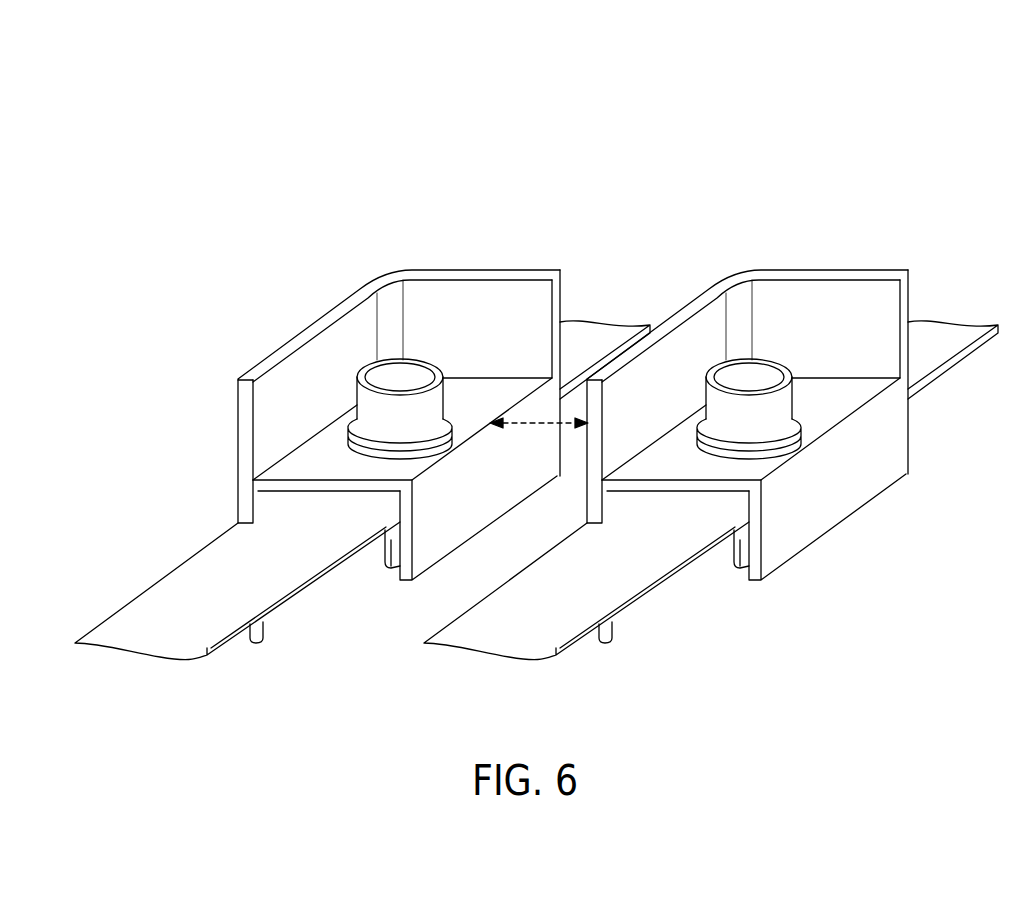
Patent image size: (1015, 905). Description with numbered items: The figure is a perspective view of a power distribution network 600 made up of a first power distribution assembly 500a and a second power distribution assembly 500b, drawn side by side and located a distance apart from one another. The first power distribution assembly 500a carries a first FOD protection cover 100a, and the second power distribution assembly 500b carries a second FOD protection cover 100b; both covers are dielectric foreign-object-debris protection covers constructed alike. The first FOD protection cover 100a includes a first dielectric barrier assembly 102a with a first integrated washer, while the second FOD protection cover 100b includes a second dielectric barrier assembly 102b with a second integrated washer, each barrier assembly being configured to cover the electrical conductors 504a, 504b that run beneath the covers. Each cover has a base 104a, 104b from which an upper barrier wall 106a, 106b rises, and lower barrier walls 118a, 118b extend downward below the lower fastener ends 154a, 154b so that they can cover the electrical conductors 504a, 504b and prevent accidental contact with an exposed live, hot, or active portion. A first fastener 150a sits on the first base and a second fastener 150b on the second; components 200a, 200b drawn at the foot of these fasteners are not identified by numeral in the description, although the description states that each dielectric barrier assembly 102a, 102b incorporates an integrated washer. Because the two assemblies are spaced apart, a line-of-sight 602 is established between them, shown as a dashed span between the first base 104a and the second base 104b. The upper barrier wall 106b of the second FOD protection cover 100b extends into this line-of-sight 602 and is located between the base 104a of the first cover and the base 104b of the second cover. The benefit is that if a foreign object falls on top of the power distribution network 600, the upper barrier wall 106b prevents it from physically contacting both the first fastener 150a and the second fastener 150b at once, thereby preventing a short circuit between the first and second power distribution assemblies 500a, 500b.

The power distribution network 600 is at (484, 155).
The first power distribution assembly 500a is at (283, 265).
The second power distribution assembly 500b is at (711, 441).
The first FOD protection cover 100a is at (397, 262).
The second FOD protection cover 100b is at (523, 254).
The first dielectric barrier assembly 102a is at (489, 402).
The second dielectric barrier assembly 102b is at (882, 368).
The base 104a is at (300, 463).
The base 104b is at (782, 451).
The upper barrier wall 106a is at (301, 321).
The upper barrier wall 106b is at (747, 356).
The lower barrier wall 118a is at (232, 513).
The lower barrier wall 118b is at (694, 536).
The first fastener 150a is at (411, 364).
The second fastener 150b is at (782, 298).
The lower fastener end 154a is at (394, 569).
The lower fastener end 154b is at (724, 586).
The flanged mount on first base 200a is at (451, 416).
The flanged mount on second base 200b is at (830, 318).
The electrical conductor 504a is at (207, 655).
The electrical conductor 504b is at (586, 613).
The line-of-sight 602 is at (543, 423).